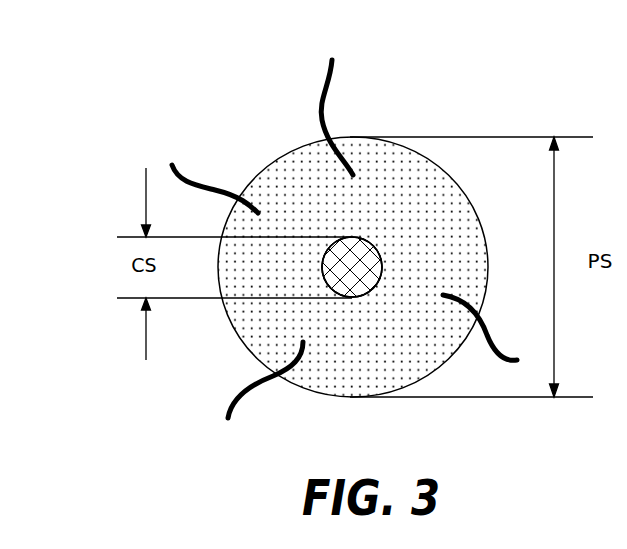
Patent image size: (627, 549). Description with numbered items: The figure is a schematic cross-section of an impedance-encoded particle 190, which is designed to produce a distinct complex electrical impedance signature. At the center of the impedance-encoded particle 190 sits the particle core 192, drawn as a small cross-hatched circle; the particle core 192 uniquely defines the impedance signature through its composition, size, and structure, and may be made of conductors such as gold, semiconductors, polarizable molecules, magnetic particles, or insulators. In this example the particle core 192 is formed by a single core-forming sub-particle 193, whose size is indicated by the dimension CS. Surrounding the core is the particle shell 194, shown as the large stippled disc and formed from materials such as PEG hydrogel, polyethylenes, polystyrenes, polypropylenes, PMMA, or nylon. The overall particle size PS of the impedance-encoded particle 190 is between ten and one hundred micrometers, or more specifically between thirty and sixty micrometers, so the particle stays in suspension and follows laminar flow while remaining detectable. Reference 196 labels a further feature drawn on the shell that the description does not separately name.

The impedance-encoded particle 190 is at (426, 96).
The particle core 192 is at (358, 250).
The core-forming sub-particle 193 is at (358, 280).
The particle shell 194 is at (322, 163).
The strength member 196 is at (230, 398).